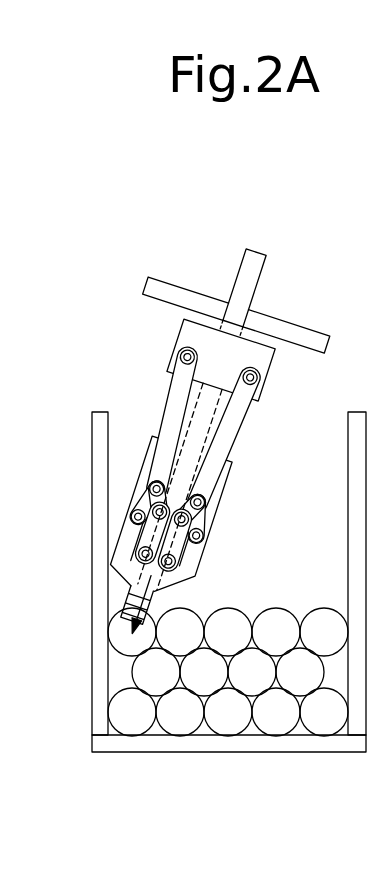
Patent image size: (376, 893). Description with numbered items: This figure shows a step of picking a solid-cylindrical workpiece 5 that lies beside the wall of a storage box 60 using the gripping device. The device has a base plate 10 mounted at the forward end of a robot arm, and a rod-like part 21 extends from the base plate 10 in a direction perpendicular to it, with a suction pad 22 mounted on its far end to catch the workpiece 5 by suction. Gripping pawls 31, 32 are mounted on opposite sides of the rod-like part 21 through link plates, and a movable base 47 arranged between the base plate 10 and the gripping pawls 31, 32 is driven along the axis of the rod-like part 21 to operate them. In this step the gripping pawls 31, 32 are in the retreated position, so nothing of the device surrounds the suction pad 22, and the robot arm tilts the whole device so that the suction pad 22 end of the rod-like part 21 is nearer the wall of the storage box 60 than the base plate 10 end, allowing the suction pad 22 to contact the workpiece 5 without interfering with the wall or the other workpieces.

The base plate 10 is at (313, 336).
The movable base 47 is at (260, 358).
The rod-like part 21 is at (219, 415).
The gripping pawl 31 is at (143, 493).
The gripping pawl 32 is at (212, 518).
The suction pad 22 is at (155, 603).
The storage box 60 is at (100, 500).
The workpiece 5 is at (118, 633).